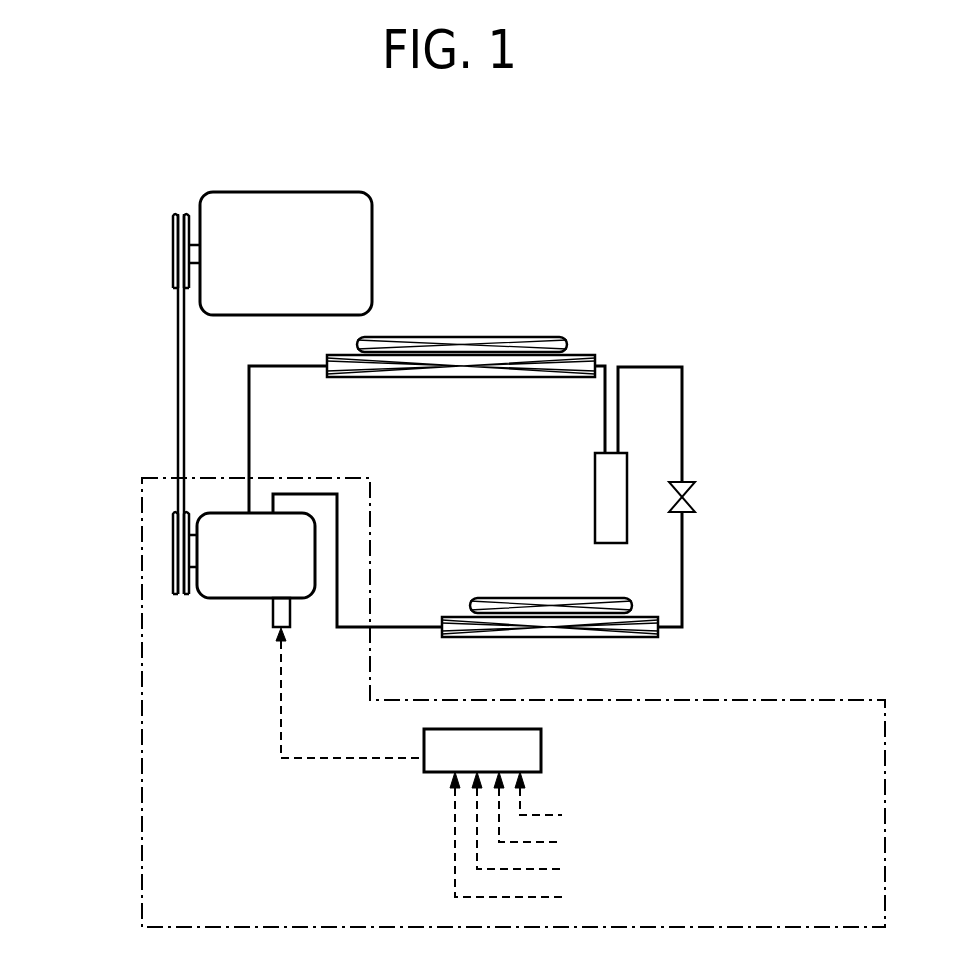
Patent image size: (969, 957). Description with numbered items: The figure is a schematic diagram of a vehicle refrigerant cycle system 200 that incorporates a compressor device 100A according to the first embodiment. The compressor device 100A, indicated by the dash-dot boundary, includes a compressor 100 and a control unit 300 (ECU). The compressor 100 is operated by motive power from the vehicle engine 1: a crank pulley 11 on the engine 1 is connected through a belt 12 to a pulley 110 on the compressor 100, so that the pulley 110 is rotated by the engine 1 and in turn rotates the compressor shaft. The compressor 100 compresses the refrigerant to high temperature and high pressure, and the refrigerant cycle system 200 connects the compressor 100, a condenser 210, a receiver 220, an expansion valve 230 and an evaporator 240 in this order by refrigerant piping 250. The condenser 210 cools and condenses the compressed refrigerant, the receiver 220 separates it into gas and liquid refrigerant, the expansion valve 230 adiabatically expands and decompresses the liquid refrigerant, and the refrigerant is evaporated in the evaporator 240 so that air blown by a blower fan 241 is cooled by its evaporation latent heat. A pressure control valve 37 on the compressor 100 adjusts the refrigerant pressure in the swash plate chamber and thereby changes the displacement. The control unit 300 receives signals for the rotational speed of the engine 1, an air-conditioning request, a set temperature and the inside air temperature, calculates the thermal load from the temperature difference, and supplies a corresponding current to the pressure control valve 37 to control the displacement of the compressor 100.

The engine 1 is at (348, 205).
The crank pulley 11 is at (173, 240).
The belt 12 is at (178, 328).
The compressor 100 is at (232, 598).
The compressor device 100A is at (142, 528).
The pulley 110 is at (173, 594).
The pressure control valve 37 is at (277, 629).
The refrigerant cycle system 200 is at (629, 364).
The condenser 210 is at (417, 364).
The receiver 220 is at (609, 508).
The expansion valve 230 is at (696, 500).
The evaporator 240 is at (551, 630).
The blower fan 241 is at (491, 603).
The refrigerant piping 250 is at (250, 421).
The control unit 300 is at (542, 744).